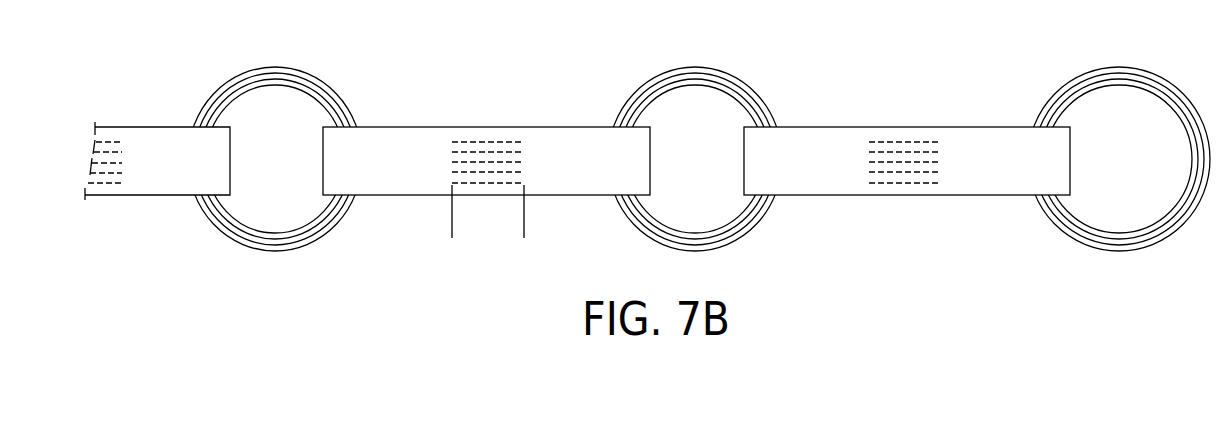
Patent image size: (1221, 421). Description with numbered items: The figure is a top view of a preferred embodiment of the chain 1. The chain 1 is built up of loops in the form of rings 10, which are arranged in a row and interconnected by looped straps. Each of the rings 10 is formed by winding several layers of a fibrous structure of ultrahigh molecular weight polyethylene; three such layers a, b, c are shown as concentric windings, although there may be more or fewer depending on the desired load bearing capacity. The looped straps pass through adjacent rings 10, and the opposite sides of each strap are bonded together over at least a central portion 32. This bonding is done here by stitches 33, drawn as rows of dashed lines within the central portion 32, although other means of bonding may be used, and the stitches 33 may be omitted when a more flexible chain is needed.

The chain 1 is at (114, 74).
The rings 10 is at (699, 128).
The central portion 32 is at (452, 233).
The stitches 33 is at (488, 139).
The layer a is at (695, 142).
The layer b is at (697, 143).
The layer c is at (711, 151).